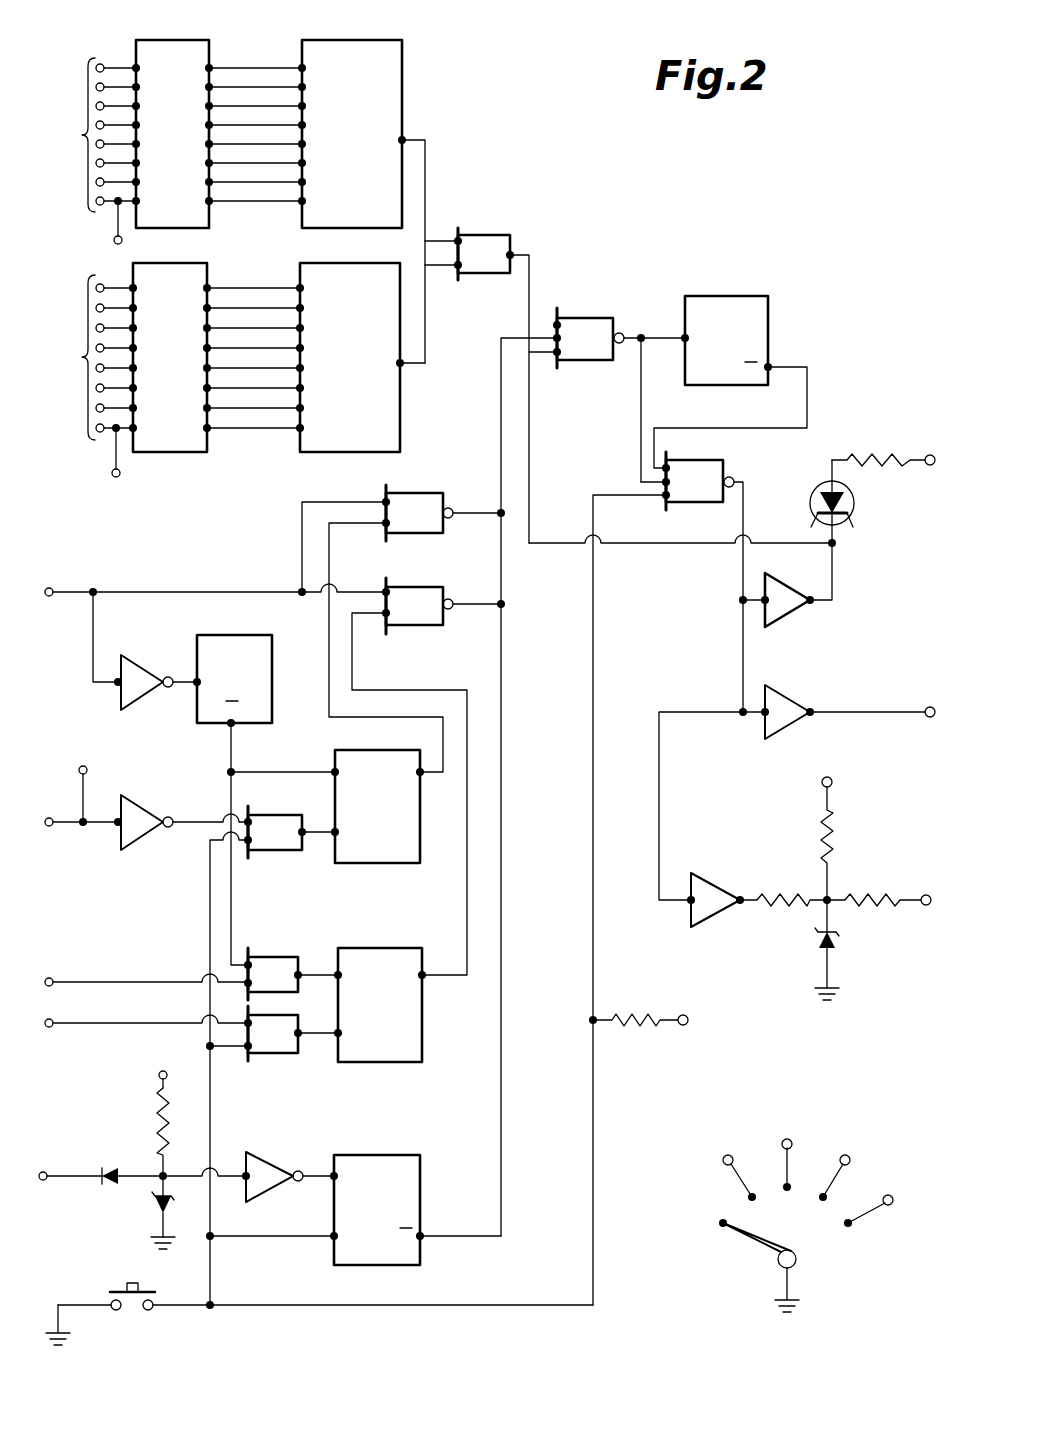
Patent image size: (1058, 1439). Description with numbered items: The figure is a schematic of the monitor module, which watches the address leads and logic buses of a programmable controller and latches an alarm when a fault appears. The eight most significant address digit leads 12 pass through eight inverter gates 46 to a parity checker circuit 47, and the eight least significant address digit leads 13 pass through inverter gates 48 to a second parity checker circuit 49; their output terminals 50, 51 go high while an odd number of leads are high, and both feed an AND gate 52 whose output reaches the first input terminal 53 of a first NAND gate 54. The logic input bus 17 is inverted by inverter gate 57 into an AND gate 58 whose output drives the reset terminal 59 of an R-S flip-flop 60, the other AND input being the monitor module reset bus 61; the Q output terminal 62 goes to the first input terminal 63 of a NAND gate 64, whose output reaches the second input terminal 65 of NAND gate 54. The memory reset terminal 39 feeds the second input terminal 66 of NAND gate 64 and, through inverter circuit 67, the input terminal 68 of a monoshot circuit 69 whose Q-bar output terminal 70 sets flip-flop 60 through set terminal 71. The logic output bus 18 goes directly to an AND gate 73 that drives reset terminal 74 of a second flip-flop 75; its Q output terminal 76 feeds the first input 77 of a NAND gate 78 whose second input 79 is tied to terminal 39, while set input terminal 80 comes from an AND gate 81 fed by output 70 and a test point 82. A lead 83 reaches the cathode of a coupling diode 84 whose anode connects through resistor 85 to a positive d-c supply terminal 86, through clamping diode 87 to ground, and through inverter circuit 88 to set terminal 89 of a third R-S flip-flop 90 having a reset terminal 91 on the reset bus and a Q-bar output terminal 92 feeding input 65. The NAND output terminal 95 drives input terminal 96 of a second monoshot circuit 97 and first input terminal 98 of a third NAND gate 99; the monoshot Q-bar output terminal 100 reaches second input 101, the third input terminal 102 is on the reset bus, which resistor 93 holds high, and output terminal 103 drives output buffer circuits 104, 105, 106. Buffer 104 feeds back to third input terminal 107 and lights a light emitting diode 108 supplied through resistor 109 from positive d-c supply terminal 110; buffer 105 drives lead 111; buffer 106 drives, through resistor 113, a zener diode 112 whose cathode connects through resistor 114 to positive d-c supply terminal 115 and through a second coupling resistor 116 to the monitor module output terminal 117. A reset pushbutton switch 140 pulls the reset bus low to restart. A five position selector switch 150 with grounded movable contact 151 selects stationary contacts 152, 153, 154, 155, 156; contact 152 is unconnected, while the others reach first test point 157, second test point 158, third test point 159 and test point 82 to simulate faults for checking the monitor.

The most significant address digit leads 12 is at (82, 357).
The least significant address digit leads 13 is at (82, 135).
The logic input bus 17 is at (50, 817).
The logic output bus 18 is at (50, 1027).
The memory reset terminal 39 is at (50, 588).
The inverter gates 46 is at (158, 452).
The parity checker circuit 47 is at (343, 452).
The inverter gates 48 is at (175, 40).
The parity checker circuit 49 is at (335, 40).
The output terminal 50 is at (403, 365).
The output terminal 51 is at (404, 138).
The AND gate 52 is at (490, 235).
The first input terminal 53 is at (557, 315).
The first NAND gate 54 is at (600, 318).
The inverter gate 57 is at (140, 795).
The AND gate 58 is at (300, 804).
The reset terminal 59 is at (331, 842).
The R-S flip-flop 60 is at (390, 863).
The monitor module reset bus 61 is at (300, 1305).
The Q output terminal 62 is at (422, 774).
The first input terminal 63 is at (384, 526).
The NAND gate 64 is at (418, 493).
The second input terminal 65 is at (553, 337).
The second input terminal 66 is at (384, 502).
The inverter circuit 67 is at (121, 701).
The input terminal 68 is at (196, 680).
The monoshot circuit 69 is at (272, 704).
The Q-bar output terminal 70 is at (229, 726).
The set terminal 71 is at (333, 770).
The AND gate 73 is at (285, 1015).
The reset terminal 74 is at (336, 1037).
The second flip-flop 75 is at (422, 1043).
The Q output terminal 76 is at (424, 977).
The first input 77 is at (386, 616).
The NAND gate 78 is at (425, 587).
The second input 79 is at (384, 592).
The set input terminal 80 is at (336, 972).
The AND gate 81 is at (287, 957).
The test point 82 is at (50, 978).
The lead 83 is at (45, 1171).
The coupling diode 84 is at (110, 1167).
The resistor 85 is at (158, 1112).
The positive d-c supply terminal 86 is at (159, 1077).
The clamping diode 87 is at (154, 1206).
The inverter circuit 88 is at (265, 1194).
The set terminal 89 is at (332, 1173).
The third R-S flip-flop 90 is at (420, 1186).
The reset terminal 91 is at (331, 1240).
The Q-bar output terminal 92 is at (422, 1238).
The resistor 93 is at (612, 1020).
The output terminal 95 is at (626, 332).
The input terminal 96 is at (684, 335).
The second monoshot circuit 97 is at (752, 296).
The first input terminal 98 is at (662, 482).
The third NAND gate 99 is at (710, 460).
The Q-bar output terminal 100 is at (770, 365).
The second input 101 is at (665, 466).
The third input terminal 102 is at (664, 499).
The output terminal 103 is at (736, 480).
The output buffer circuit 104 is at (790, 626).
The output buffer circuit 105 is at (790, 738).
The output buffer circuit 106 is at (730, 873).
The third input terminal 107 is at (556, 362).
The light emitting diode 108 is at (854, 517).
The resistor 109 is at (875, 460).
The positive d-c supply terminal 110 is at (930, 455).
The lead 111 is at (930, 707).
The zener diode 112 is at (818, 942).
The resistor 113 is at (800, 884).
The resistor 114 is at (830, 840).
The positive d-c supply terminal 115 is at (832, 780).
The second coupling resistor 116 is at (890, 899).
The monitor module output terminal 117 is at (926, 905).
The reset pushbutton switch 140 is at (116, 1280).
The five position selector switch 150 is at (794, 1207).
The movable contact 151 is at (797, 1258).
The stationary contact 152 is at (718, 1225).
The stationary contact 153 is at (748, 1198).
The stationary contact 154 is at (790, 1186).
The stationary contact 155 is at (826, 1196).
The stationary contact 156 is at (877, 1219).
The first test point 157 is at (114, 240).
The second test point 158 is at (112, 478).
The third test point 159 is at (84, 766).